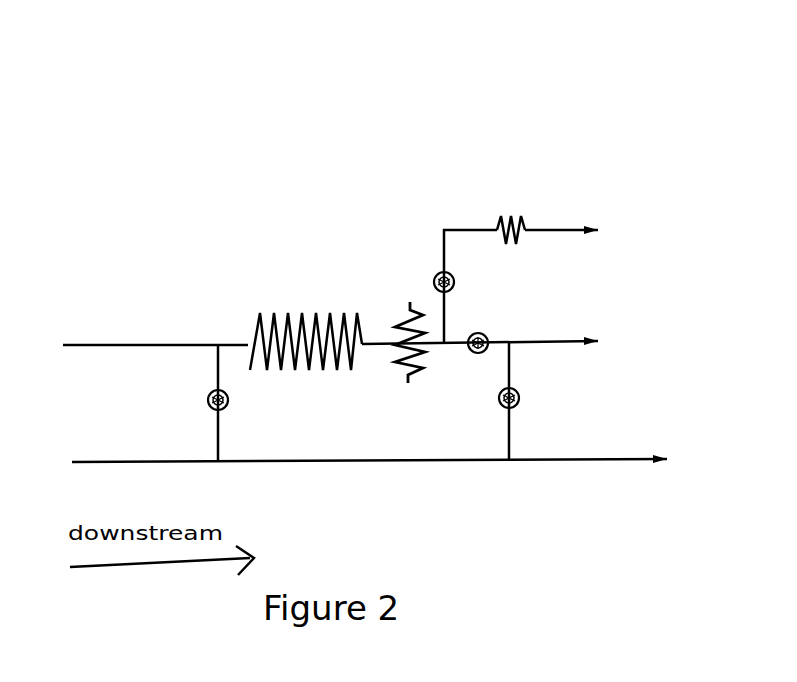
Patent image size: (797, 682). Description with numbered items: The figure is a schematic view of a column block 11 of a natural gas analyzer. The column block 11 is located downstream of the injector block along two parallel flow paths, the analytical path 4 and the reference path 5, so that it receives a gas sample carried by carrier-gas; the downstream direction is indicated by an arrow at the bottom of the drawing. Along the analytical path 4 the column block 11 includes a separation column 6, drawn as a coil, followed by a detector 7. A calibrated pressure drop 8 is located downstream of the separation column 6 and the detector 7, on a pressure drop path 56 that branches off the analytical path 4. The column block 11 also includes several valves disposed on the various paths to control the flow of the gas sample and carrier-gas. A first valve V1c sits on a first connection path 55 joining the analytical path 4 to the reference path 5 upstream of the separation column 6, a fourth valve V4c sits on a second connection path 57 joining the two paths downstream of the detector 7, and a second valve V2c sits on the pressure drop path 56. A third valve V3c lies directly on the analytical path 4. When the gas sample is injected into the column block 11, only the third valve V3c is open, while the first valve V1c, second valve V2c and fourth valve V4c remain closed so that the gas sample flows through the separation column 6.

The column block 11 is at (320, 85).
The analytical path 4 is at (590, 332).
The reference path 5 is at (630, 453).
The separation column 6 is at (306, 323).
The detector 7 is at (405, 272).
The calibrated pressure drop 8 is at (525, 210).
The first connection path 55 is at (218, 440).
The pressure drop path 56 is at (469, 230).
The second connection path 57 is at (507, 432).
The first valve V1c is at (207, 398).
The second valve V2c is at (454, 278).
The third valve V3c is at (488, 334).
The fourth valve V4c is at (519, 399).